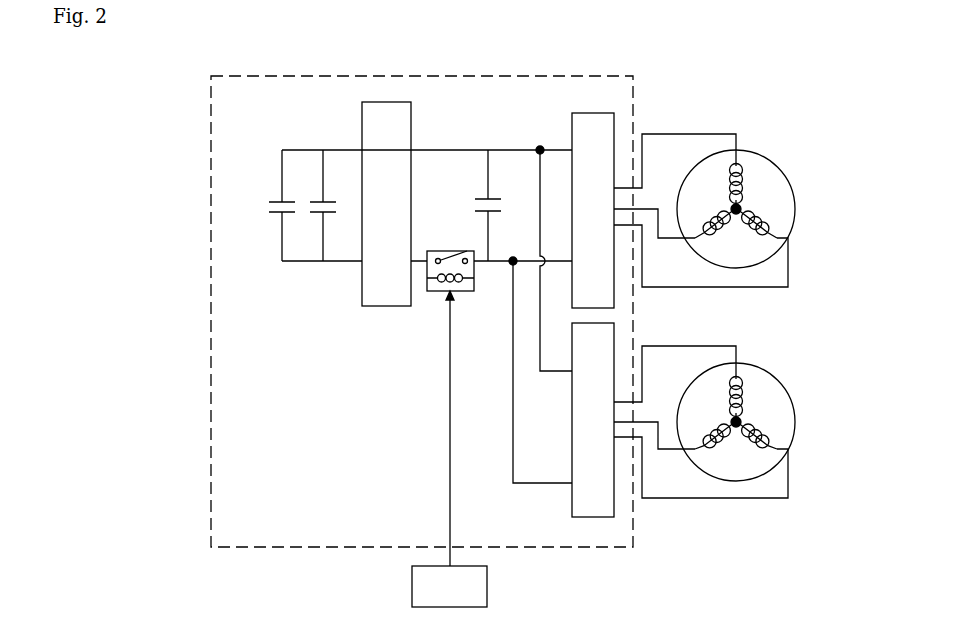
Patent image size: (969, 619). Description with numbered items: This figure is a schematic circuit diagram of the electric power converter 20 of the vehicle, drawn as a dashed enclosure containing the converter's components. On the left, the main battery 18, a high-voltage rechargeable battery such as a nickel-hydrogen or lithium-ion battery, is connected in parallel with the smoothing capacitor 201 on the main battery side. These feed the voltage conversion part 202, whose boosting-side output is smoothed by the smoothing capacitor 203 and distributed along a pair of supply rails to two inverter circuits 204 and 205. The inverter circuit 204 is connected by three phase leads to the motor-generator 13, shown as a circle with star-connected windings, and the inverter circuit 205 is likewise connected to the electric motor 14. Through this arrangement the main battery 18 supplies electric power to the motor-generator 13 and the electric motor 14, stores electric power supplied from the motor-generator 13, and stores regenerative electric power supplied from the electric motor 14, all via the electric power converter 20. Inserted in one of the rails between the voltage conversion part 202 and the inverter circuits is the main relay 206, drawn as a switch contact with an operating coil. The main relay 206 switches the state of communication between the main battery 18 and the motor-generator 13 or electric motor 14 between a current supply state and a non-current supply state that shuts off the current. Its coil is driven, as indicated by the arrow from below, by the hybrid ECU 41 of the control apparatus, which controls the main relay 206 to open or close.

The electric power converter 20 is at (612, 76).
The main battery 18 is at (278, 200).
The smoothing capacitor 201 is at (328, 200).
The voltage conversion part 202 is at (385, 306).
The smoothing capacitor 203 is at (494, 197).
The inverter circuit 204 is at (585, 113).
The inverter circuit 205 is at (580, 517).
The main relay 206 is at (447, 250).
The motor-generator 13 is at (757, 155).
The electric motor 14 is at (757, 368).
The hybrid ECU 41 is at (488, 587).